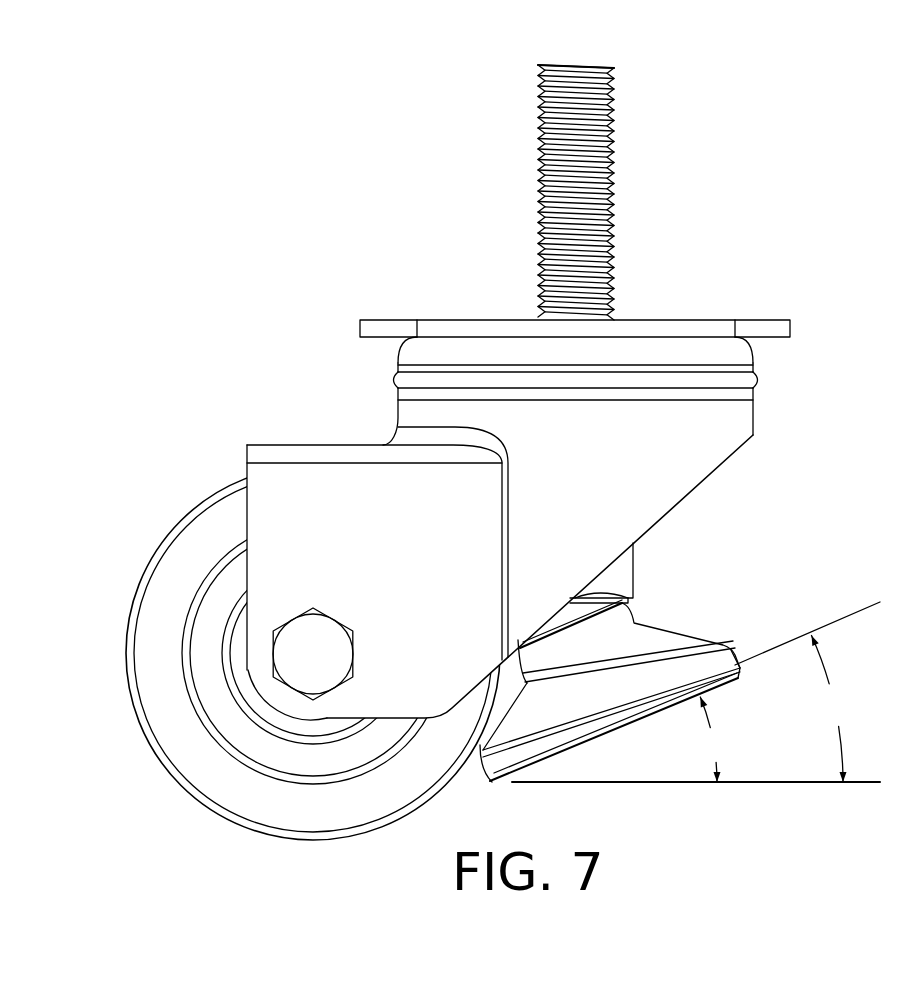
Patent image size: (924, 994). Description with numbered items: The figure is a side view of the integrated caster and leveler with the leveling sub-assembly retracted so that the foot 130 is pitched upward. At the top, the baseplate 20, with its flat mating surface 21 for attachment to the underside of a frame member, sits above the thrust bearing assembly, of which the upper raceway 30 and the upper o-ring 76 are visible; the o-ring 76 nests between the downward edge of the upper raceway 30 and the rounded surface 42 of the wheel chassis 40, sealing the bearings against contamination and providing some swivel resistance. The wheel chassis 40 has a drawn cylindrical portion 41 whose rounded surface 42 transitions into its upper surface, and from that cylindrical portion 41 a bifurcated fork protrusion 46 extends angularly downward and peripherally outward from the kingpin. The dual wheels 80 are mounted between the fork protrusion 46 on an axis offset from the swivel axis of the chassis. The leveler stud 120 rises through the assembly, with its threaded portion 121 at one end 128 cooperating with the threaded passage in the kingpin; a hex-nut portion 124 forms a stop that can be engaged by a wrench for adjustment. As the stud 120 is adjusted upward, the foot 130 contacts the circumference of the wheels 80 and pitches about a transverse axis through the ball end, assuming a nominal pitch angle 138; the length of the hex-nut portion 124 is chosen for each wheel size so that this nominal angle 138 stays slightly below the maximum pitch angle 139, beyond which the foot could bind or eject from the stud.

The baseplate 20 is at (605, 304).
The flat mating surface 21 is at (575, 304).
The upper raceway 30 is at (606, 354).
The wheel chassis 40 is at (598, 415).
The drawn cylindrical portion 41 is at (398, 422).
The rounded surface 42 is at (398, 397).
The bifurcated fork protrusion 46 is at (300, 443).
The upper o-ring 76 is at (572, 365).
The dual wheels 80 is at (304, 653).
The stud 120 is at (618, 173).
The threaded portion 121 is at (612, 232).
The hex-nut portion 124 is at (633, 573).
The stud end 128 is at (599, 47).
The foot 130 is at (622, 689).
The nominal pitch angle 138 is at (717, 739).
The maximum pitch angle 139 is at (832, 708).